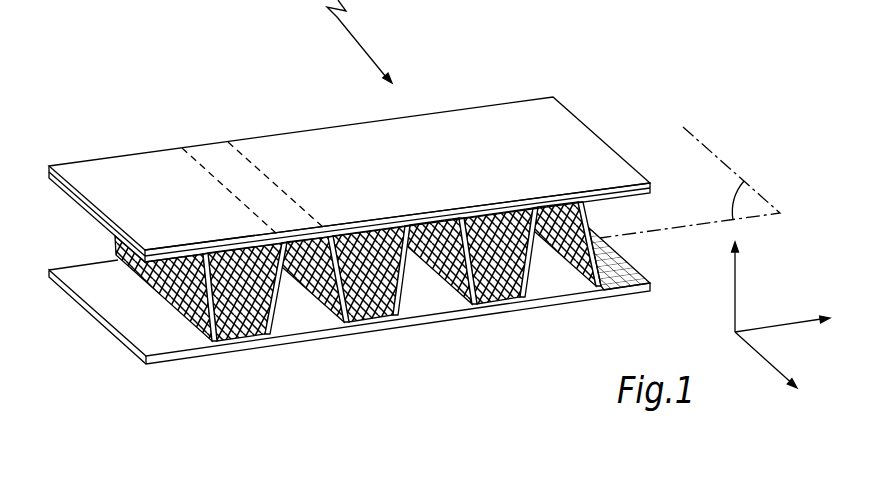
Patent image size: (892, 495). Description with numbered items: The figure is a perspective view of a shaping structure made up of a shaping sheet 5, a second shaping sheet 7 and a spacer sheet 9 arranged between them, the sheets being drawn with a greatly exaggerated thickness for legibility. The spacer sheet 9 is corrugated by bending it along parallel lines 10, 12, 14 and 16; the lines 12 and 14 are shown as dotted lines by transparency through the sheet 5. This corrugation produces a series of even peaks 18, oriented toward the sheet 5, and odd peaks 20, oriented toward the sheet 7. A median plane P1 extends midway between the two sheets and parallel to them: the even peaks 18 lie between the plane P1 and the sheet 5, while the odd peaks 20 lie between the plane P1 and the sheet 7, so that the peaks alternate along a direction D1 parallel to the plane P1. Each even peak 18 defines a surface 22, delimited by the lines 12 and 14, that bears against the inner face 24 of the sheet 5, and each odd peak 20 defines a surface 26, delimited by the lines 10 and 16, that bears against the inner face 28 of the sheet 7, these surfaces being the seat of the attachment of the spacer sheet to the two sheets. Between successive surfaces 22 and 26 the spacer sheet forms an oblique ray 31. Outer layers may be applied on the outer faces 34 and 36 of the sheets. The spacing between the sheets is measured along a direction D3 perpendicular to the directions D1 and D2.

The shaping sheet 5 is at (553, 110).
The ray 31 is at (162, 296).
The shaping sheet 7 is at (423, 306).
The spacer sheet 9 is at (598, 299).
The bending line 10 is at (270, 347).
The bending line 12 is at (183, 150).
The bending line 14 is at (262, 167).
The bending line 16 is at (306, 326).
The even peak 18 is at (223, 256).
The odd peak 20 is at (246, 328).
The surface 22 is at (222, 165).
The inner face 24 is at (620, 200).
The surface 26 is at (325, 346).
The inner face 28 is at (494, 303).
The outer face 34 is at (414, 153).
The outer face 36 is at (437, 307).
The median plane P1 is at (690, 182).
The direction D1 is at (782, 313).
The direction D2 is at (777, 360).
The direction D3 is at (750, 287).